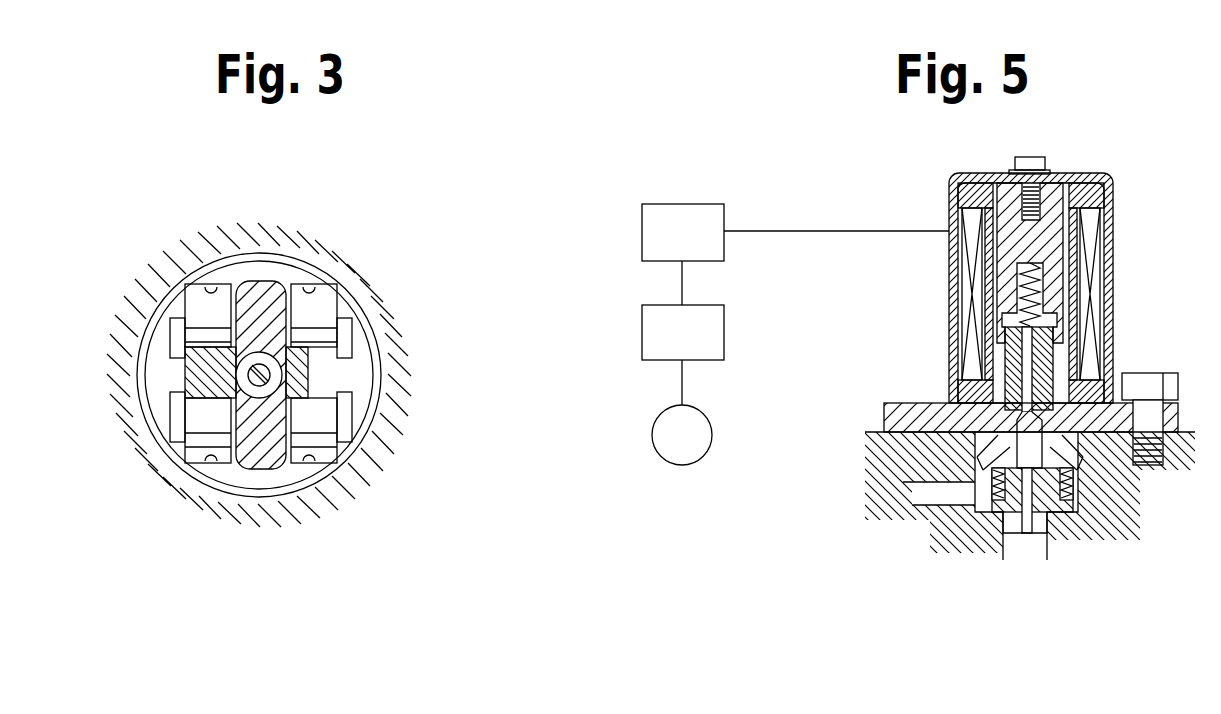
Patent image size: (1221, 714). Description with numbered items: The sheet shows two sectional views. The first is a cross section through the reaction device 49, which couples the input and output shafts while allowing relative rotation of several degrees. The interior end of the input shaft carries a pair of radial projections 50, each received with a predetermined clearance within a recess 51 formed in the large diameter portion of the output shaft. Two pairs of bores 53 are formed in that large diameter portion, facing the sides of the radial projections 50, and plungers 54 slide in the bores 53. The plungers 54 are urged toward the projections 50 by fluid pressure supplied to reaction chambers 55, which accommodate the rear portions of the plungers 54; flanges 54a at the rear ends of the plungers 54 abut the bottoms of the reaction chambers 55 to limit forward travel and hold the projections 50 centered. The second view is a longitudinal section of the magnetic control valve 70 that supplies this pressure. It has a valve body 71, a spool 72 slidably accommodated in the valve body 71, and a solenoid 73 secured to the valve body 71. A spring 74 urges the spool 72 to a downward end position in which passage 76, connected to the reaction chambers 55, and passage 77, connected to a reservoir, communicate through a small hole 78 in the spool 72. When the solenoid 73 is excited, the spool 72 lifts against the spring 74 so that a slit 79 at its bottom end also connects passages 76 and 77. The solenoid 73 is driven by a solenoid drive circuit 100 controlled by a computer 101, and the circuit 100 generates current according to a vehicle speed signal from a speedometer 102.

In FIG. 3, the reaction device 49 is at (311, 261).
In FIG. 3, the radial projections 50 is at (268, 305).
In FIG. 3, the recesses 51 is at (245, 300).
In FIG. 3, the bores 53 is at (203, 285).
In FIG. 3, the plungers 54 is at (197, 333).
In FIG. 3, the flanges 54a is at (178, 322).
In FIG. 3, the reaction chambers 55 is at (158, 386).
In FIG. 5, the magnetic control valve 70 is at (1124, 211).
In FIG. 5, the valve body 71 is at (906, 403).
In FIG. 5, the spool 72 is at (1040, 360).
In FIG. 5, the solenoid 73 is at (1090, 235).
In FIG. 5, the spring 74 is at (1022, 276).
In FIG. 5, the passage 76 is at (920, 484).
In FIG. 5, the passage 77 is at (1005, 540).
In FIG. 5, the small hole 78 is at (977, 455).
In FIG. 5, the slit 79 is at (1012, 467).
In FIG. 5, the solenoid drive circuit 100 is at (718, 214).
In FIG. 5, the computer 101 is at (718, 336).
In FIG. 5, the speedometer 102 is at (703, 432).